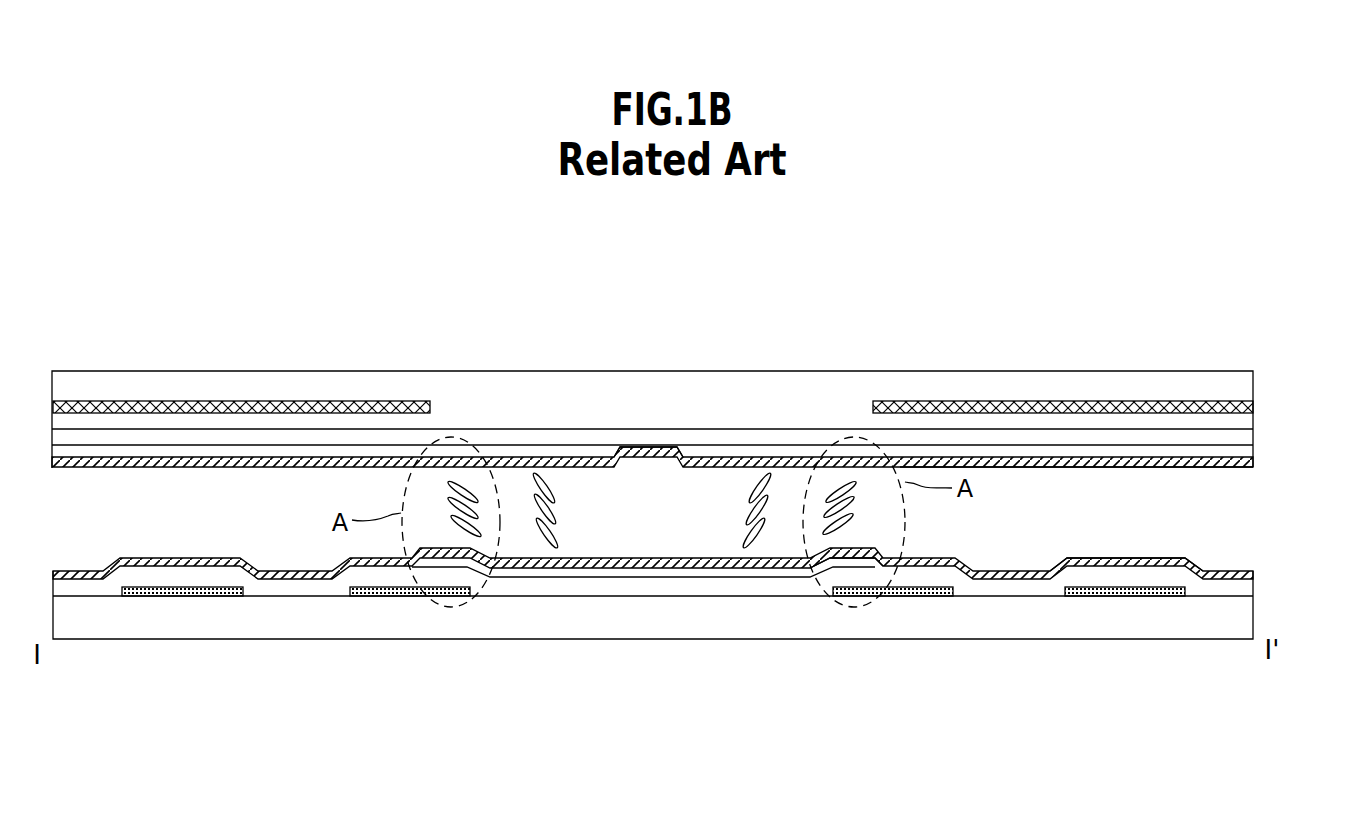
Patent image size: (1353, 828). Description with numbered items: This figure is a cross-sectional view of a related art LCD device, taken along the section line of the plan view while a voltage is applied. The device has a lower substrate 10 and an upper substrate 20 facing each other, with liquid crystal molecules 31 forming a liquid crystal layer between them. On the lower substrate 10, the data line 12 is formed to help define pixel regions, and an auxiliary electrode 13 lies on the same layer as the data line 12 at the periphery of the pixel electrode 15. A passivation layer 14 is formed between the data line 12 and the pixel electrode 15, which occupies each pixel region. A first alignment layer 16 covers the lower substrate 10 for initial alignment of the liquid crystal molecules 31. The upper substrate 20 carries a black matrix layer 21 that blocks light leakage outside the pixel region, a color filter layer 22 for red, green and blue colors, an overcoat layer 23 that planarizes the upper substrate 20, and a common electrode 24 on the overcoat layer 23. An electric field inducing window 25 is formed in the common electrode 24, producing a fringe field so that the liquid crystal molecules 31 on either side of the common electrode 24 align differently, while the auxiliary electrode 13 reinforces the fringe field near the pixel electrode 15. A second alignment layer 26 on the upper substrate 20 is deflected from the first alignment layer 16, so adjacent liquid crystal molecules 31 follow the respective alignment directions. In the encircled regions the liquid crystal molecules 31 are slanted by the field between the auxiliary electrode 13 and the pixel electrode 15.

The lower substrate 10 is at (1247, 618).
The data line 12 is at (168, 597).
The auxiliary electrode 13 is at (392, 597).
The passivation layer 14 is at (1247, 585).
The pixel electrode 15 is at (653, 578).
The first alignment layer 16 is at (1100, 559).
The upper substrate 20 is at (1112, 381).
The black matrix layer 21 is at (1202, 400).
The color filter layer 22 is at (1247, 420).
The overcoat layer 23 is at (1247, 433).
The common electrode 24 is at (1247, 450).
The electric field inducing window 25 is at (641, 462).
The second alignment layer 26 is at (1227, 468).
The liquid crystal molecules 31 is at (840, 528).